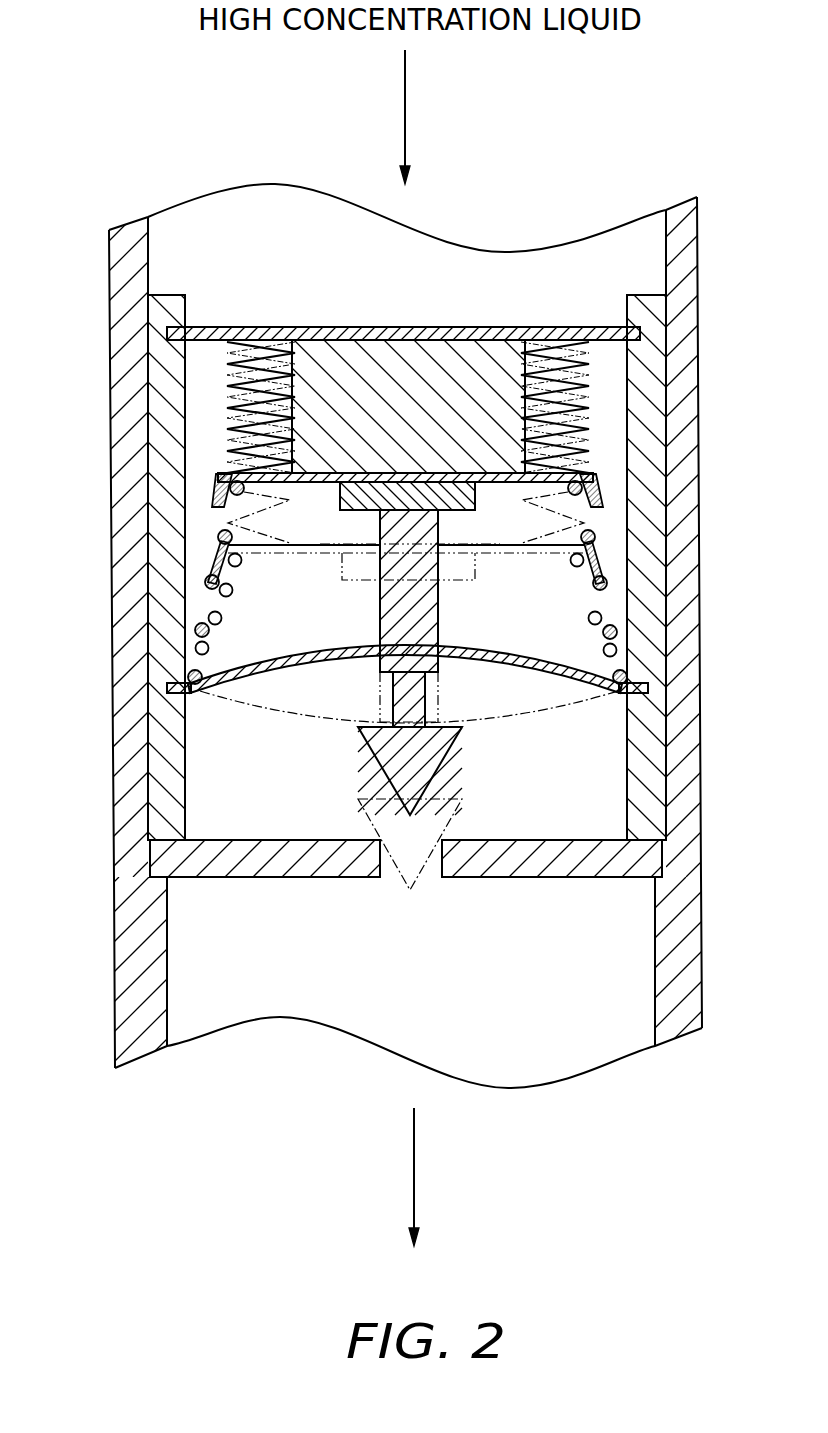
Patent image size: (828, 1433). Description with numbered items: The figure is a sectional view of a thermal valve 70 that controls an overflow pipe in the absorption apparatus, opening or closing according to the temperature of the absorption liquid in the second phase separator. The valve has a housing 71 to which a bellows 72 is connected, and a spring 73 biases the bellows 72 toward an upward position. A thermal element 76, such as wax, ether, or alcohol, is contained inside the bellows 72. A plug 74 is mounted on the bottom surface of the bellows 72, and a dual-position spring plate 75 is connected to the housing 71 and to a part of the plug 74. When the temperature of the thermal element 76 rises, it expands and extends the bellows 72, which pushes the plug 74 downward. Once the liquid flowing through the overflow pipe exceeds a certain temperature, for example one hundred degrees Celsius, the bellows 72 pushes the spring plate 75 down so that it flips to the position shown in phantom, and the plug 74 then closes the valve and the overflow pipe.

The thermal valve 70 is at (221, 148).
The housing 71 is at (628, 310).
The bellows 72 is at (245, 350).
The spring 73 is at (586, 586).
The plug 74 is at (445, 760).
The dual-position spring plate 75 is at (283, 662).
The thermal element 76 is at (366, 367).